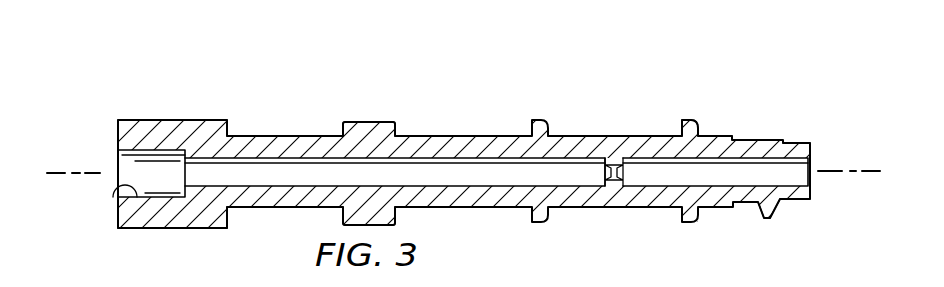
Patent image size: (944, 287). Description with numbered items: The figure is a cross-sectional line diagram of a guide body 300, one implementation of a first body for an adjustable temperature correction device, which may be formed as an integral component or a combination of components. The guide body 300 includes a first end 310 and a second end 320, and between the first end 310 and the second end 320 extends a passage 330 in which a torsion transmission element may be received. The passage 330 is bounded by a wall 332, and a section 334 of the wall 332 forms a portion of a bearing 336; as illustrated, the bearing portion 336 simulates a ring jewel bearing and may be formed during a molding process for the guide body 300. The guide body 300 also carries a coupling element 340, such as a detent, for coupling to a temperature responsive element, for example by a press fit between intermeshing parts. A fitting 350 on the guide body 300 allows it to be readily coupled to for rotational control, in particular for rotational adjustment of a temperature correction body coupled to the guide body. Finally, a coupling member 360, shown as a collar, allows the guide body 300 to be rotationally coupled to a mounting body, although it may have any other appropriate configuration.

The guide body 300 is at (283, 52).
The first end 310 is at (815, 148).
The second end 320 is at (115, 220).
The passage 330 is at (99, 158).
The wall 332 is at (113, 190).
The section of wall 334 is at (625, 124).
The bearing portion 336 is at (608, 185).
The coupling element 340 is at (772, 210).
The fitting 350 is at (386, 121).
The coupling member 360 is at (172, 119).